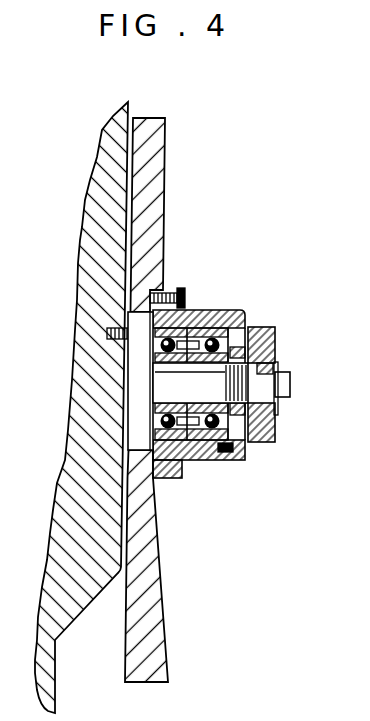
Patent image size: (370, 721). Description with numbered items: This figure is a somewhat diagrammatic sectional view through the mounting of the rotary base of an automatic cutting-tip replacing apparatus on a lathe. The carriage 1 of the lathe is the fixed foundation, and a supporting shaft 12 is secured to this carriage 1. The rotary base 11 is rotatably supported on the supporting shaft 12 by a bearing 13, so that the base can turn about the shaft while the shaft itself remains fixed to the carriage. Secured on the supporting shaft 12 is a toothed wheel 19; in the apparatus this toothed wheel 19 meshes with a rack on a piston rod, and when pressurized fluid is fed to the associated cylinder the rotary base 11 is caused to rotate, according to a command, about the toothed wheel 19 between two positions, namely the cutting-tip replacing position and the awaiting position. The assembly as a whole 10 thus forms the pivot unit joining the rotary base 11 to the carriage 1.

The carriage 1 is at (112, 127).
The hub unit 10 is at (171, 207).
The rotary base 11 is at (148, 129).
The supporting shaft 12 is at (168, 380).
The bearing 13 is at (235, 289).
The toothed wheel 19 is at (273, 418).